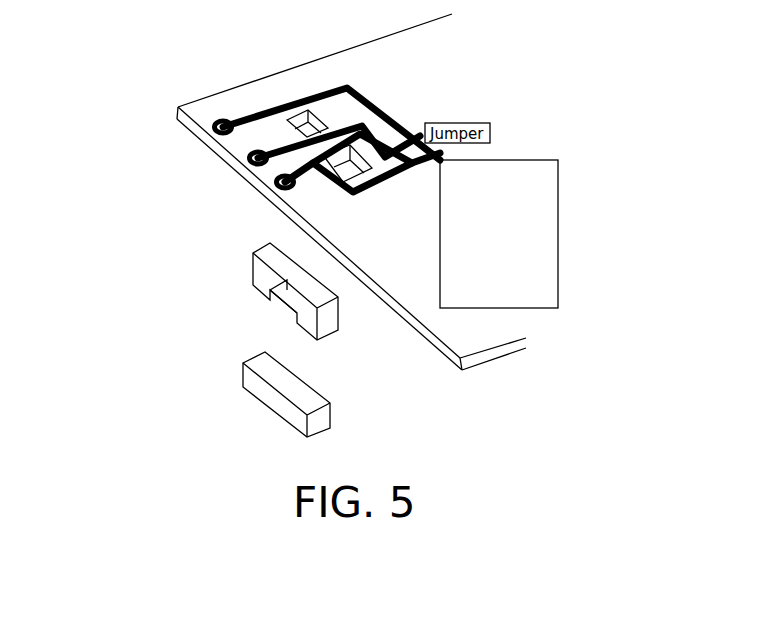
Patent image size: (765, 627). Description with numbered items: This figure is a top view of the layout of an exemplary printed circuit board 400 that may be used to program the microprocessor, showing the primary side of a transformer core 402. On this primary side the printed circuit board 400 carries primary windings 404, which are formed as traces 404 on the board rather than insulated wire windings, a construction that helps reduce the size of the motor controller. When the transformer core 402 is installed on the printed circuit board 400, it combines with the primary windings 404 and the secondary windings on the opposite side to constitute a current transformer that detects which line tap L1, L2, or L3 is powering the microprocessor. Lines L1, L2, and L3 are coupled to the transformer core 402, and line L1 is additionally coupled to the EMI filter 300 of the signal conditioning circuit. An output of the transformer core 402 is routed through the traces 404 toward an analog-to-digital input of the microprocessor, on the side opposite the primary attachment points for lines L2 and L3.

The printed circuit board 400 is at (128, 40).
The transformer core 402 is at (226, 298).
The primary windings 404 is at (397, 120).
The line L1 is at (215, 130).
The line L2 is at (273, 192).
The line L3 is at (240, 162).
The EMI filter 300 is at (499, 234).